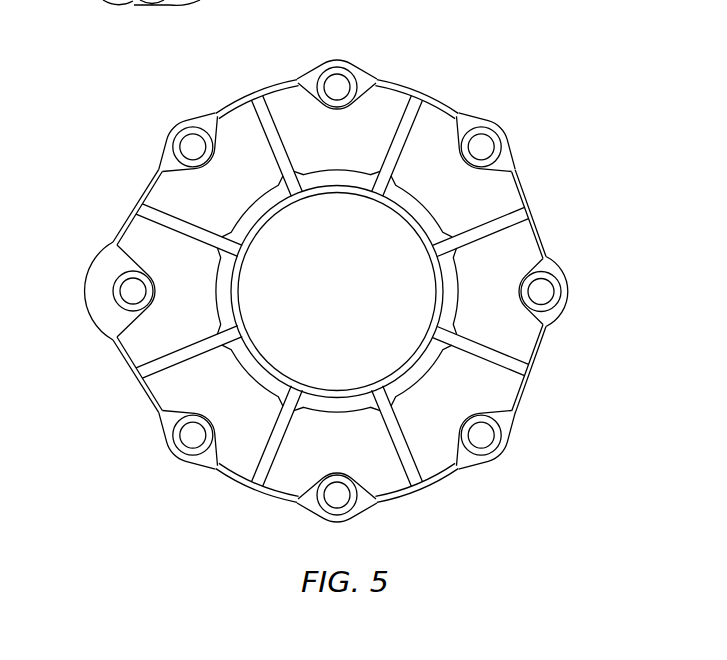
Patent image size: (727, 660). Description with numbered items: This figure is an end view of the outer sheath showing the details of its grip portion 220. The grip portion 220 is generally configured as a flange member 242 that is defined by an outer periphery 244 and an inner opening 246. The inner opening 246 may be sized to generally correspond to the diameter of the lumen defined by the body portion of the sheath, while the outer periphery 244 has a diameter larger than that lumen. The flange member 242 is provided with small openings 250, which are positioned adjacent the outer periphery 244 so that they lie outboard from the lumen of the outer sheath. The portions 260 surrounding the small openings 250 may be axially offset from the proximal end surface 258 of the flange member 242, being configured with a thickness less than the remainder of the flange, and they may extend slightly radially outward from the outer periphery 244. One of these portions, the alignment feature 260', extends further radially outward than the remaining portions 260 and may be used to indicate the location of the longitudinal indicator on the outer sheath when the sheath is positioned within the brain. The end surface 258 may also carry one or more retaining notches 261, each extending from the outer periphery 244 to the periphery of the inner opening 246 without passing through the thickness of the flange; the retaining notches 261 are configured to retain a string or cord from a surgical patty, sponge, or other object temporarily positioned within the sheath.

The grip portion 220 is at (465, 100).
The flange member 242 is at (518, 252).
The outer periphery 244 is at (553, 350).
The inner opening 246 is at (354, 300).
The small openings 250 is at (338, 90).
The proximal end surface 258 is at (218, 189).
The portions surrounding small openings 260 is at (332, 66).
The alignment feature 260' is at (91, 292).
The retaining notches 261 is at (503, 220).